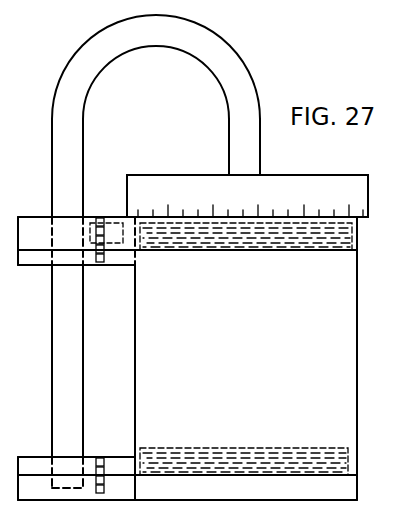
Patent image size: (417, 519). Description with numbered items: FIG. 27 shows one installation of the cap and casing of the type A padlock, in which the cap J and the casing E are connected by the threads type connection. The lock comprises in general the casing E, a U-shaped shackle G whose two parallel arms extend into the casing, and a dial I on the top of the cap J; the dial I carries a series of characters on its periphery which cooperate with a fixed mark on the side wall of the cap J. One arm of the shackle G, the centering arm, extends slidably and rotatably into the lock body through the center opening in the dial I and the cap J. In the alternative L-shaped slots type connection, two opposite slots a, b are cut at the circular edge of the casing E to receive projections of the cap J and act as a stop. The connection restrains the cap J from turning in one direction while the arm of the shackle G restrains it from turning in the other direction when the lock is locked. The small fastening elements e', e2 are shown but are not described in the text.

The shackle G is at (207, 44).
The casing E is at (352, 409).
The dial I is at (346, 182).
The cap J is at (362, 246).
The slot a is at (40, 225).
The slot b is at (36, 262).
The upper pin e' is at (106, 222).
The lower pin e2 is at (108, 455).